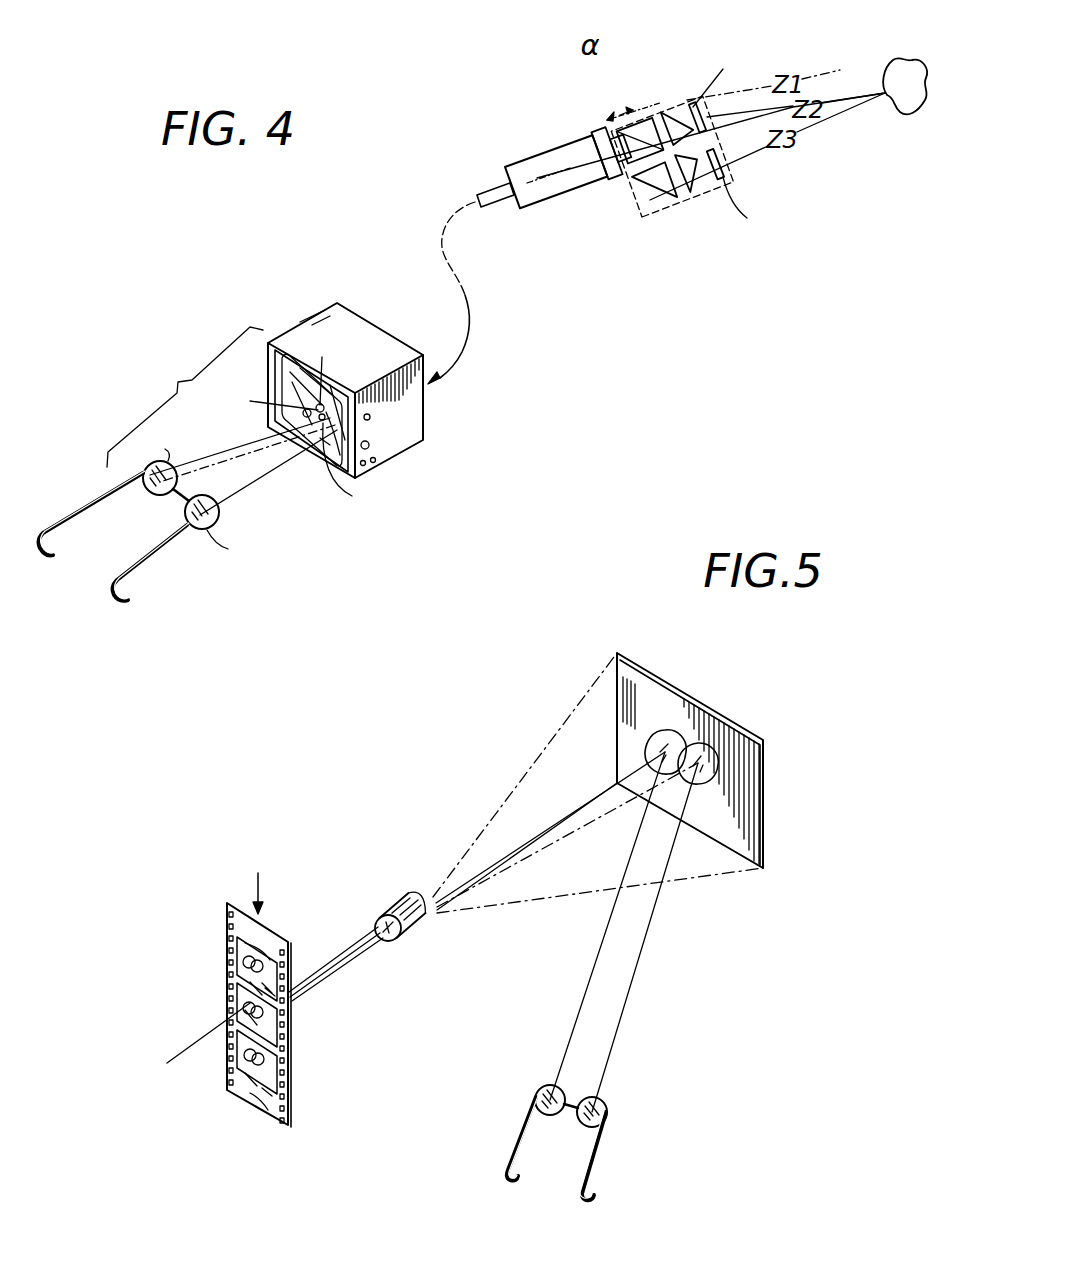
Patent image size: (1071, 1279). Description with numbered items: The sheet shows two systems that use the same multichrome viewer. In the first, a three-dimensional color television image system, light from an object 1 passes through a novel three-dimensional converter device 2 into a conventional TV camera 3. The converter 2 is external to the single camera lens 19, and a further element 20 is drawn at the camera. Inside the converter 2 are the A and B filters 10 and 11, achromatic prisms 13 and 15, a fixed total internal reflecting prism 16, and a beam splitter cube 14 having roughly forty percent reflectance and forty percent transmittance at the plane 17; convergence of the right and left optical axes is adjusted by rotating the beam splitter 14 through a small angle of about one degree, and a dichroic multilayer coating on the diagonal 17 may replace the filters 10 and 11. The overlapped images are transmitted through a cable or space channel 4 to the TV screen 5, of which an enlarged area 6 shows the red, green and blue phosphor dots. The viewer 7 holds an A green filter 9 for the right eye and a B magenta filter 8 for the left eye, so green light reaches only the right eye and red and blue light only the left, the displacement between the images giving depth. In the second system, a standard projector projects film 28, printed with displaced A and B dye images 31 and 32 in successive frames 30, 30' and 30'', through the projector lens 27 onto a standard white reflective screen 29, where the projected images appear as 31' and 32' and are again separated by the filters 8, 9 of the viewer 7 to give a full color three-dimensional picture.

In FIG. 4, the object 1 is at (897, 70).
In FIG. 4, the 3D converter device 2 is at (663, 213).
In FIG. 4, the TV camera 3 is at (532, 163).
In FIG. 4, the cable or space channel 4 is at (452, 267).
In FIG. 4, the TV screen 5 is at (337, 423).
In FIG. 4, the enlarged area 6 is at (322, 425).
In FIG. 4, the viewer 7 is at (144, 510).
In FIG. 5, the viewer 7 is at (570, 1124).
In FIG. 4, the B magenta filter 8 is at (152, 492).
In FIG. 5, the B magenta filter 8 is at (543, 1085).
In FIG. 4, the A green filter 9 is at (190, 517).
In FIG. 5, the A green filter 9 is at (607, 1102).
In FIG. 4, the A filter 10 is at (707, 107).
In FIG. 4, the B filter 11 is at (723, 167).
In FIG. 4, the achromatic prism 13 is at (665, 115).
In FIG. 4, the beam splitter cube 14 is at (640, 125).
In FIG. 4, the achromatic prism 15 is at (696, 195).
In FIG. 4, the fixed total internal reflecting prism 16 is at (642, 190).
In FIG. 4, the plane 17 is at (612, 108).
In FIG. 4, the camera lens 19 is at (603, 137).
In FIG. 4, the camera objective 20 is at (593, 150).
In FIG. 5, the projector lens 27 is at (413, 940).
In FIG. 5, the film 28 is at (277, 932).
In FIG. 5, the screen 29 is at (640, 663).
In FIG. 5, the film frame 30 is at (218, 943).
In FIG. 5, the film frame 30' is at (212, 990).
In FIG. 5, the film frame 30'' is at (216, 1071).
In FIG. 5, the A image 31 is at (207, 989).
In FIG. 5, the projected first partial image 31' is at (656, 730).
In FIG. 5, the B image 32 is at (258, 1032).
In FIG. 5, the projected second partial image 32' is at (730, 734).